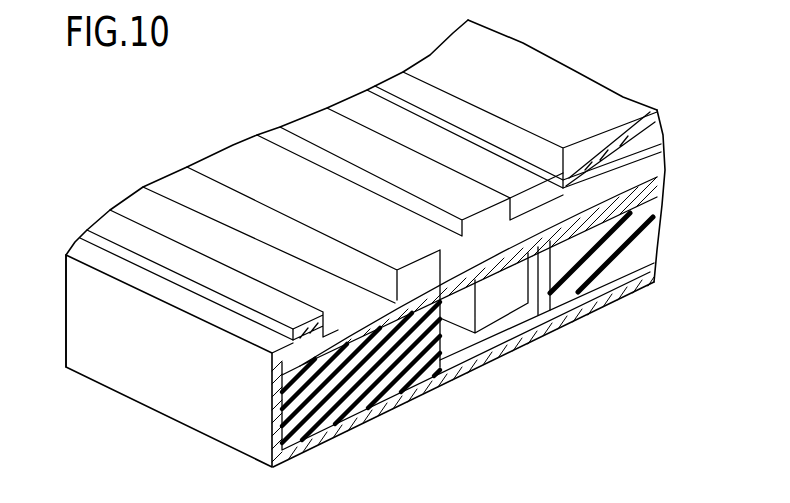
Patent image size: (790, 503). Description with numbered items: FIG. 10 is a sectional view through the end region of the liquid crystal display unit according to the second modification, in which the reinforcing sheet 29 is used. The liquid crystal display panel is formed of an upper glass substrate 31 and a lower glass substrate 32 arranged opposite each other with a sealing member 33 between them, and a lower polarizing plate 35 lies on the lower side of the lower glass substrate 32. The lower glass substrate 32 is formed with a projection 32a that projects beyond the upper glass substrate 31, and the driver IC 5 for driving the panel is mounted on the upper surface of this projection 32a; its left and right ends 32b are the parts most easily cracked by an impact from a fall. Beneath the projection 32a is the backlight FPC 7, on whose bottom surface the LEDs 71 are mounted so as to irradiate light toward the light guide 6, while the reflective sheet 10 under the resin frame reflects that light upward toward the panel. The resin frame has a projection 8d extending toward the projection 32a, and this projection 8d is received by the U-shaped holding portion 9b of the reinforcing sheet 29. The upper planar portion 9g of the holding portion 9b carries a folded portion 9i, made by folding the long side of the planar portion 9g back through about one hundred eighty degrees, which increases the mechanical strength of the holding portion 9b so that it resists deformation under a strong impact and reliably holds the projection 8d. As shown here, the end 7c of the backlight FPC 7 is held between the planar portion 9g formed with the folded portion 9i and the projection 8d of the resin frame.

The reinforcing sheet 29 is at (95, 353).
The U-shaped holding portion 9b is at (137, 367).
The planar portion 9g is at (190, 305).
The folded portion 9i is at (253, 297).
The backlight FPC 7 is at (142, 202).
The left and right ends of the projection 32b is at (233, 160).
The projection 32a is at (288, 185).
The driver IC 5 is at (305, 127).
The upper glass substrate 31 is at (660, 128).
The lower glass substrate 32 is at (657, 163).
The sealing member 33 is at (590, 170).
The lower polarizing plate 35 is at (658, 200).
The LEDs 71 is at (500, 303).
The light guide 6 is at (638, 240).
The reflective sheet 10 is at (628, 275).
The projection of the resin frame 8d is at (355, 380).
The end of the backlight FPC 7c is at (322, 373).